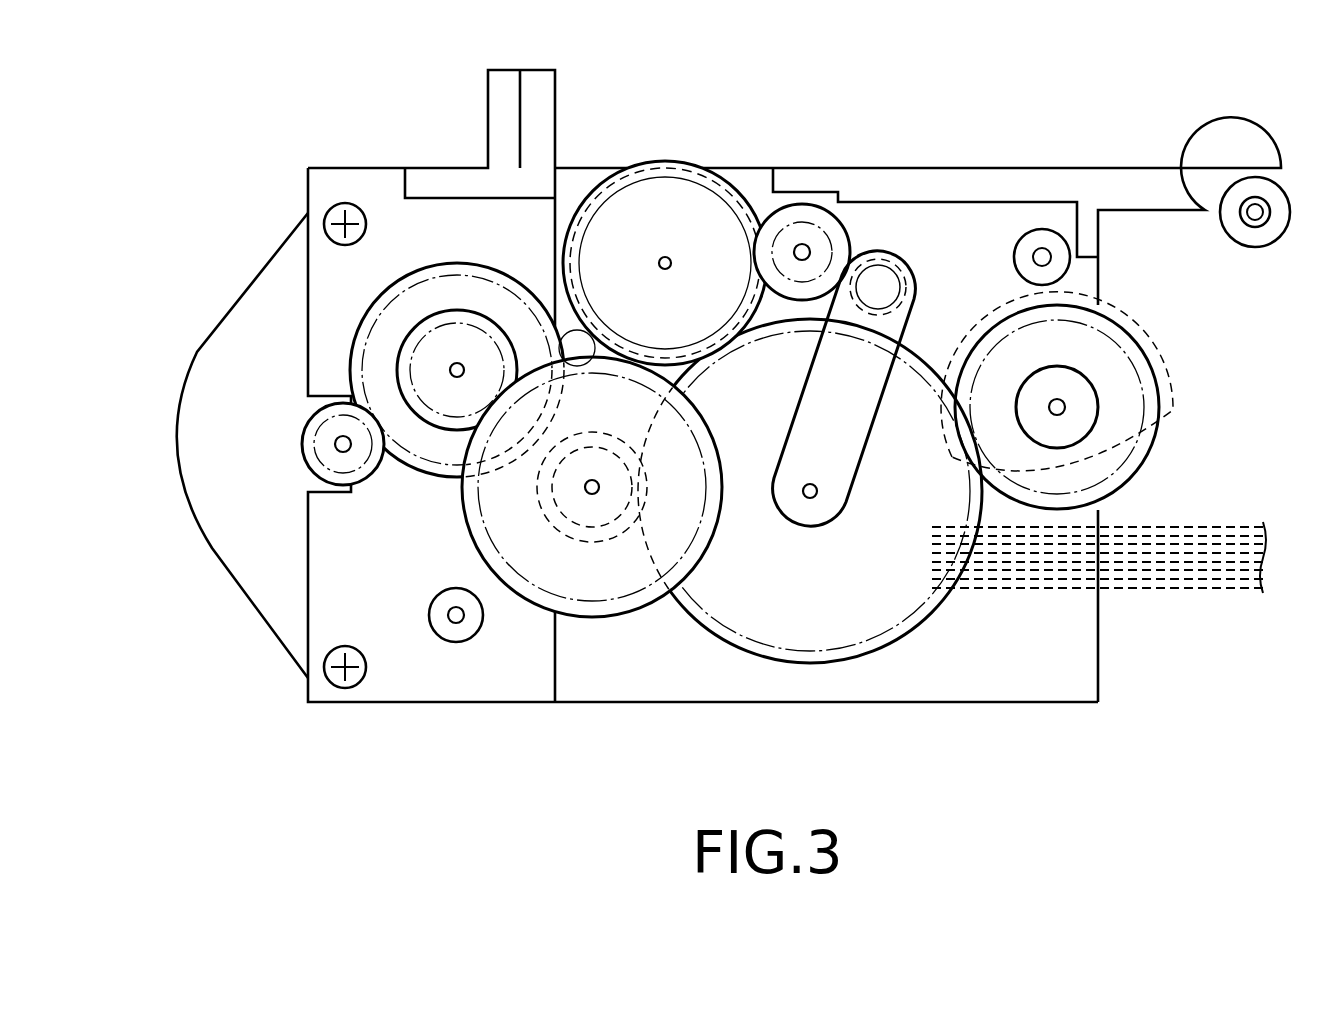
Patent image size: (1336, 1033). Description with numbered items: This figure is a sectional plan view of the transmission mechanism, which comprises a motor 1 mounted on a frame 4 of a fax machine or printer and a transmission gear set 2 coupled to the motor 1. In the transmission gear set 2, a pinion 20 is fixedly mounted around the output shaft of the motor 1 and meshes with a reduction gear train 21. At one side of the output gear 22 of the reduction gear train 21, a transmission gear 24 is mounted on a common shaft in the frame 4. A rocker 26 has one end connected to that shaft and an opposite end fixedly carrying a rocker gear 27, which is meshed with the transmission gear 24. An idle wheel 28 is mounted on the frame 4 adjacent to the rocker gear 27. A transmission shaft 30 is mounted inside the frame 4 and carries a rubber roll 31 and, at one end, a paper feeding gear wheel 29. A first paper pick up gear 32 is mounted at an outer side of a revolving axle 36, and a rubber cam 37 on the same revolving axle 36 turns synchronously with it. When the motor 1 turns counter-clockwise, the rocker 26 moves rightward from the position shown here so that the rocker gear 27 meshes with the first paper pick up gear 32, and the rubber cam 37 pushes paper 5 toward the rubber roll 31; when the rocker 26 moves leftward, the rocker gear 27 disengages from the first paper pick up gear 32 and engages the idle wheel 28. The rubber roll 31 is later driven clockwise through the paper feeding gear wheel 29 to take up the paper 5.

The motor 1 is at (234, 375).
The transmission gear set 2 is at (939, 288).
The frame 4 is at (384, 183).
The paper 5 is at (1212, 527).
The pinion 20 is at (313, 464).
The reduction gear train 21 is at (435, 469).
The output gear 22 is at (485, 546).
The transmission gear 24 is at (813, 655).
The rocker 26 is at (856, 432).
The rocker gear 27 is at (886, 250).
The idle wheel 28 is at (810, 205).
The paper feeding gear wheel 29 is at (727, 175).
The transmission shaft 30 is at (660, 258).
The rubber roll 31 is at (657, 167).
The first paper pick up gear 32 is at (1135, 334).
The revolving axle 36 is at (1063, 407).
The rubber cam 37 is at (1127, 433).